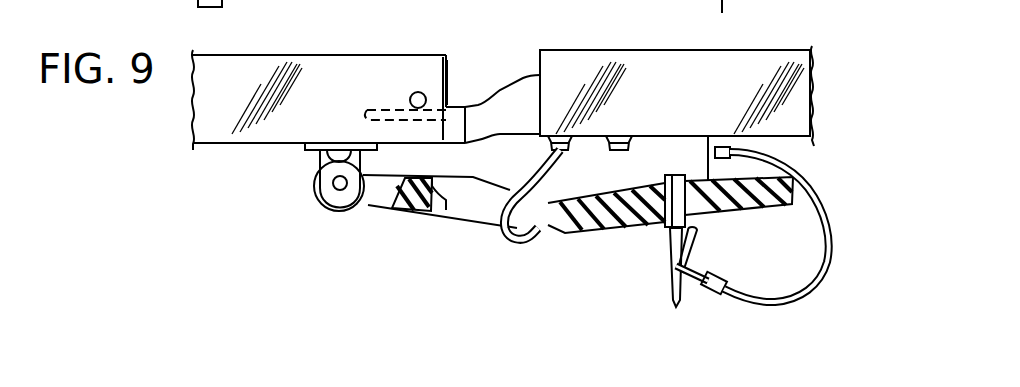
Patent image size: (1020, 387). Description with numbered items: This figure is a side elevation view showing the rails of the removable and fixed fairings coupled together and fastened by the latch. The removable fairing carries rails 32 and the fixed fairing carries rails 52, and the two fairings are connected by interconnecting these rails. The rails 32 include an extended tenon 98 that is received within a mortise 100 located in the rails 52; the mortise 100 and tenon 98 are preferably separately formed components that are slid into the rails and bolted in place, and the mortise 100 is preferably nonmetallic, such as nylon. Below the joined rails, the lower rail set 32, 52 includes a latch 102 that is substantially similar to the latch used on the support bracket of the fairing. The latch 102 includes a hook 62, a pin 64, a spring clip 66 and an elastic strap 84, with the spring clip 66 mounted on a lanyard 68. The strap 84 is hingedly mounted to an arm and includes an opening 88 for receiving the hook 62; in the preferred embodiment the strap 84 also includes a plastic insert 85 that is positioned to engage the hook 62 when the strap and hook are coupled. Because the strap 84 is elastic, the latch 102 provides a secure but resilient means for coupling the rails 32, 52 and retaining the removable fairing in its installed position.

The rail 32 is at (677, 50).
The rail 52 is at (222, 143).
The hook 62 is at (512, 237).
The pin 64 is at (665, 230).
The spring clip 66 is at (676, 305).
The lanyard 68 is at (830, 258).
The elastic strap 84 is at (405, 213).
The plastic insert 85 is at (553, 233).
The opening 88 is at (446, 210).
The extended tenon 98 is at (497, 86).
The mortise 100 is at (447, 70).
The latch 102 is at (326, 268).